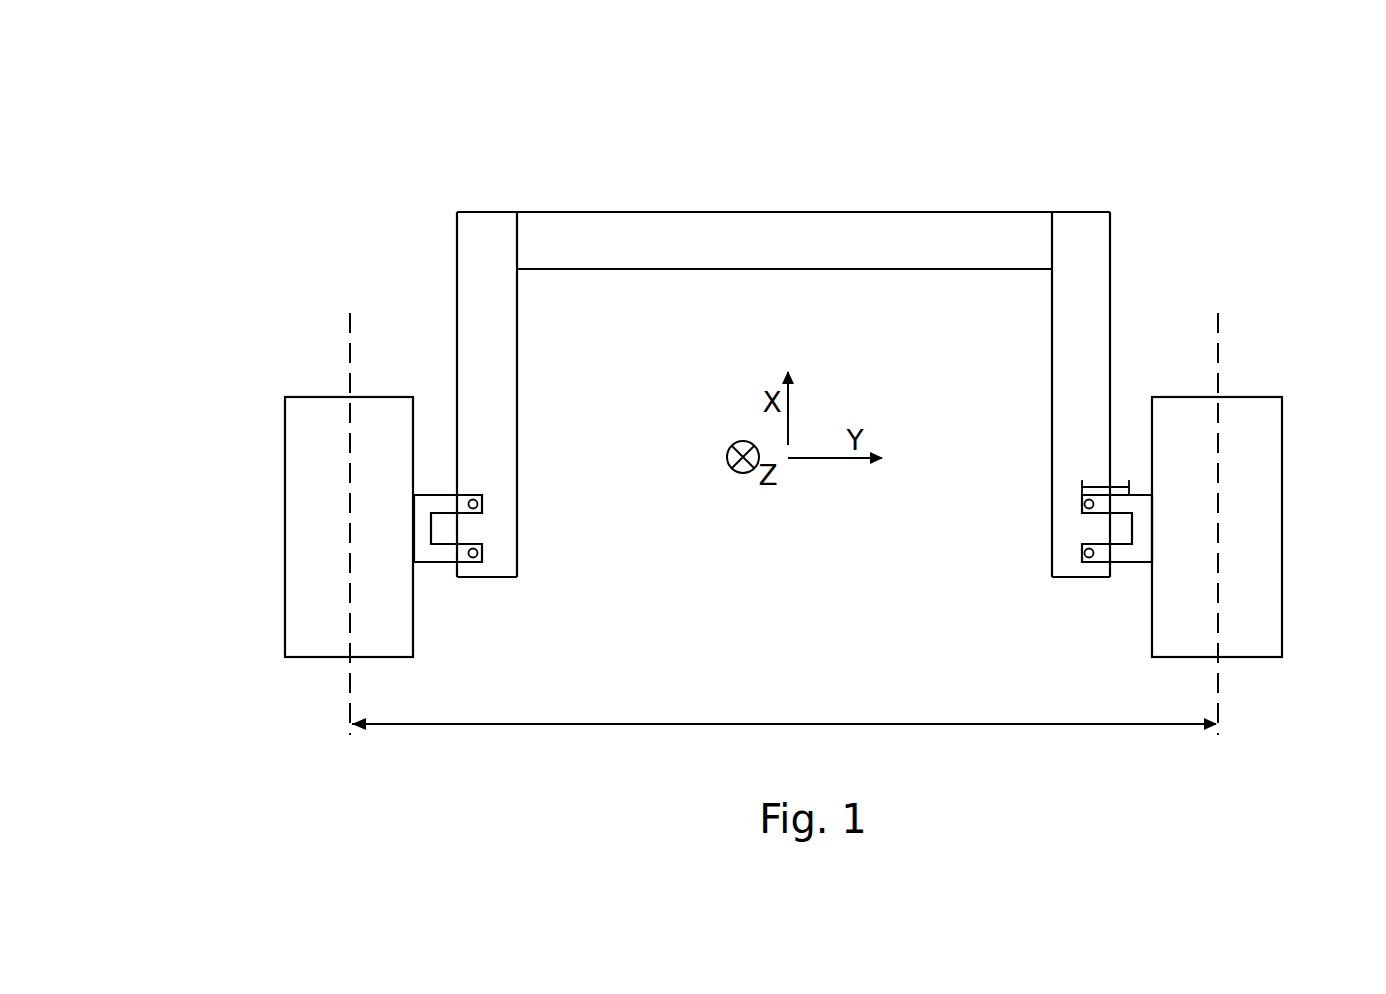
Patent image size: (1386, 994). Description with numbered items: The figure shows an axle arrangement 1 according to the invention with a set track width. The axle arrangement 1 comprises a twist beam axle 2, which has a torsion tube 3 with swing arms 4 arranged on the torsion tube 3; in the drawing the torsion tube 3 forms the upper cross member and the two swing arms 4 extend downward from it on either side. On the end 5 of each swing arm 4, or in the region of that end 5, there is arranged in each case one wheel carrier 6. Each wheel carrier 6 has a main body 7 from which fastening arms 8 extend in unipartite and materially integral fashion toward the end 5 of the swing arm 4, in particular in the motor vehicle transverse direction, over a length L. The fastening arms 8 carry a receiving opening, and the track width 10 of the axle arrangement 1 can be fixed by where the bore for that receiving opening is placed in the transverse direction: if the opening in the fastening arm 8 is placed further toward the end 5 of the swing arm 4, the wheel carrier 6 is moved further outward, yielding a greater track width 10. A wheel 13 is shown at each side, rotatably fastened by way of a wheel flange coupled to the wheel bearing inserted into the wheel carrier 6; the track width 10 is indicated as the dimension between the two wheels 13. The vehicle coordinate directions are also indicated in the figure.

The axle arrangement 1 is at (368, 158).
The twist beam axle 2 is at (580, 178).
The torsion tube 3 is at (777, 227).
The swing arms 4 is at (468, 337).
The end of the swing arm 5 is at (519, 583).
The wheel carrier 6 is at (431, 480).
The main body 7 is at (422, 543).
The fastening arms 8 is at (478, 504).
The track width 10 is at (784, 712).
The wheel 13 is at (310, 586).
The length L is at (1098, 486).